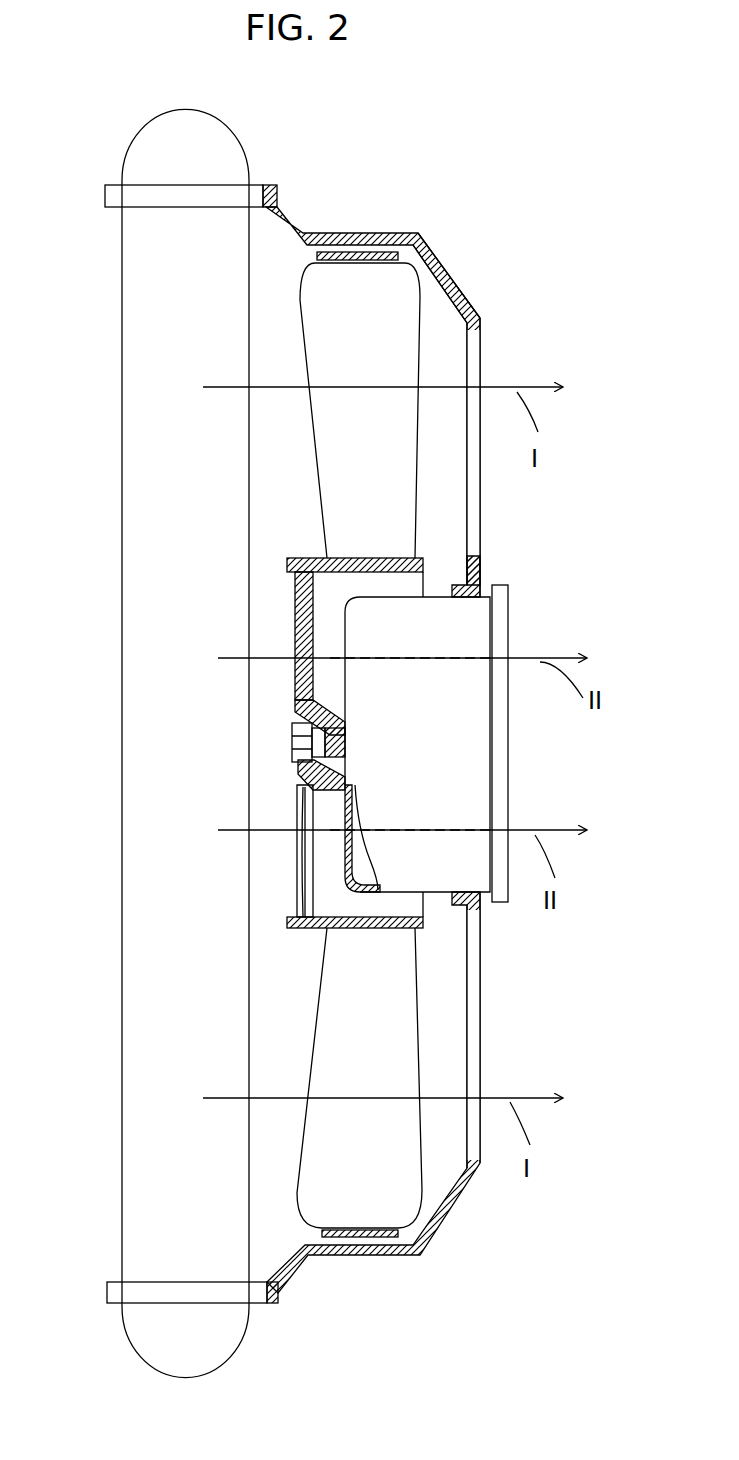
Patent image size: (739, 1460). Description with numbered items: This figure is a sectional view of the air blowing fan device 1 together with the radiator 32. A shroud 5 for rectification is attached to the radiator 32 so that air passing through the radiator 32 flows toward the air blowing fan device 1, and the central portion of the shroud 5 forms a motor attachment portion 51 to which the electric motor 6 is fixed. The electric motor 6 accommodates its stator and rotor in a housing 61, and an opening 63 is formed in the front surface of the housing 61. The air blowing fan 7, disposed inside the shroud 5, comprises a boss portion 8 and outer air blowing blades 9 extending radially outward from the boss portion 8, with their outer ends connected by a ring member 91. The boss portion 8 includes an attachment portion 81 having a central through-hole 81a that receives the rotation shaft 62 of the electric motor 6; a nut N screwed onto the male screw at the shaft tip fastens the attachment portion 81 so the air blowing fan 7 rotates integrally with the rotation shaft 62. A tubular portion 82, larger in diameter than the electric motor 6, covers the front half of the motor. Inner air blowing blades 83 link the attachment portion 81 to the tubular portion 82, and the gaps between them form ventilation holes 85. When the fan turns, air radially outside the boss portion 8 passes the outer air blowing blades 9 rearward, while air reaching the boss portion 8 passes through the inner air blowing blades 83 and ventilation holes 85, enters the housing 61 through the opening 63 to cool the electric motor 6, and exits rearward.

The air blowing fan device 1 is at (435, 373).
The shroud 5 is at (372, 232).
The electric motor 6 is at (512, 627).
The air blowing fan 7 is at (423, 323).
The boss portion 8 is at (303, 558).
The outer air blowing blades 9 is at (390, 492).
The radiator 32 is at (122, 765).
The motor attachment portion 51 is at (480, 570).
The housing 61 is at (477, 760).
The rotation shaft 62 is at (320, 745).
The opening 63 is at (350, 815).
The attachment portion 81 is at (330, 710).
The through-hole 81a is at (305, 778).
The tubular portion 82 is at (380, 926).
The inner air blowing blades 83 is at (300, 625).
The ventilation holes 85 is at (302, 855).
The ring member 91 is at (362, 1240).
The nut N is at (297, 745).